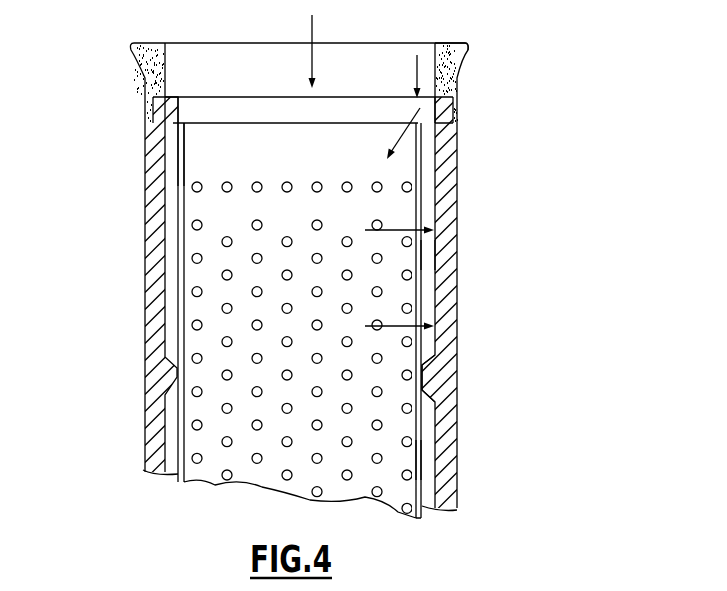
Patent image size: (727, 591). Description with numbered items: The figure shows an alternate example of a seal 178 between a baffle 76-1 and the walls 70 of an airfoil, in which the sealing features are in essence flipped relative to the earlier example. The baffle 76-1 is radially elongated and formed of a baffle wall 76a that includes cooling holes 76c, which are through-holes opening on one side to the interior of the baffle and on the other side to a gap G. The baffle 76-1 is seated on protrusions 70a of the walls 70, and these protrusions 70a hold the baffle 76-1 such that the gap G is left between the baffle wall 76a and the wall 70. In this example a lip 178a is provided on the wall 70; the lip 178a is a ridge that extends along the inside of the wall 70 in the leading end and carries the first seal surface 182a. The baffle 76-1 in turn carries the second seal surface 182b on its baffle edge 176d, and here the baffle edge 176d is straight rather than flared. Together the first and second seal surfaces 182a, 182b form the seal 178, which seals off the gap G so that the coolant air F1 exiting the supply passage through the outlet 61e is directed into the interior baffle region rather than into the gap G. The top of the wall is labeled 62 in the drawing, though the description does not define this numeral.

The wall 70 is at (152, 224).
The protrusion 70a is at (437, 361).
The seal 178 is at (405, 159).
The lip 178a is at (171, 121).
The outlet 61e is at (353, 72).
The wall top 62 is at (440, 42).
The baffle edge 176d is at (199, 136).
The baffle wall 76a is at (422, 422).
The cooling holes 76c is at (221, 443).
The baffle 76-1 is at (432, 459).
The gap G is at (425, 255).
The second seal surface 182b is at (178, 144).
The first seal surface 182a is at (176, 164).
The coolant air F1 is at (312, 53).